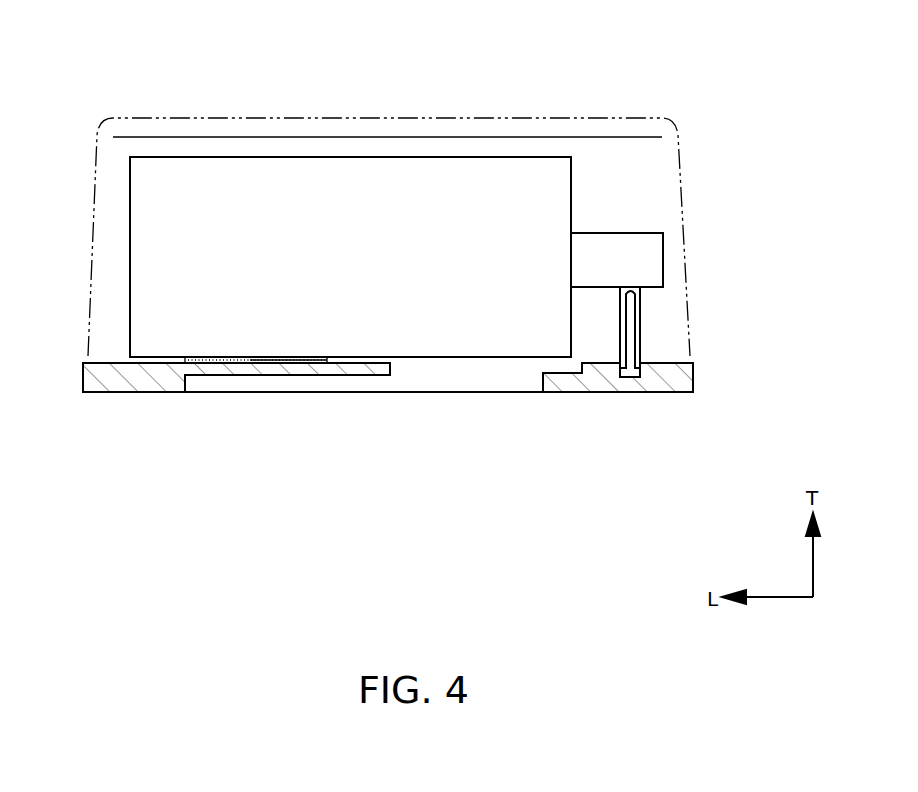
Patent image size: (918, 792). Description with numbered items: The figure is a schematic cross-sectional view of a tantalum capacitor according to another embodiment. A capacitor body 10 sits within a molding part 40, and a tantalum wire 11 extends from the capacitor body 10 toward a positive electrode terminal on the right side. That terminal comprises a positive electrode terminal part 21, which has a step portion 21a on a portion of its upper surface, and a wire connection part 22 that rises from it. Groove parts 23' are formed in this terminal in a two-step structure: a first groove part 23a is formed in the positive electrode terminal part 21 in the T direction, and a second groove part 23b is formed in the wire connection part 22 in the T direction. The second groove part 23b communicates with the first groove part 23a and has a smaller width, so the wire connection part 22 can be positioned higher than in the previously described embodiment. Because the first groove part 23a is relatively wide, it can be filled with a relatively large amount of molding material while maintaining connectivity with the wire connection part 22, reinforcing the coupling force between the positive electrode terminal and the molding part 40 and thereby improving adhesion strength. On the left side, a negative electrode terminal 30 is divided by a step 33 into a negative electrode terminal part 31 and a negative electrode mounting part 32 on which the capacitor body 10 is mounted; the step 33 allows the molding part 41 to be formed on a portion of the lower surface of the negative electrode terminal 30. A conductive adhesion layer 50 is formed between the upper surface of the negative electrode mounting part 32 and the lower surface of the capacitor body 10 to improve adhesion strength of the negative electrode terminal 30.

The capacitor body 10 is at (362, 170).
The tantalum wire 11 is at (650, 243).
The positive electrode terminal part 21 is at (593, 392).
The step portion 21a is at (568, 364).
The wire connection part 22 is at (639, 303).
The first groove part 23a is at (636, 376).
The second groove part 23b is at (632, 333).
The groove part 23' is at (686, 505).
The negative electrode terminal 30 is at (309, 455).
The negative electrode terminal part 31 is at (132, 393).
The negative electrode mounting part 32 is at (230, 373).
The step 33 is at (190, 383).
The molding part 40 is at (476, 125).
The molding part 41 is at (250, 387).
The conductive adhesion layer 50 is at (292, 362).